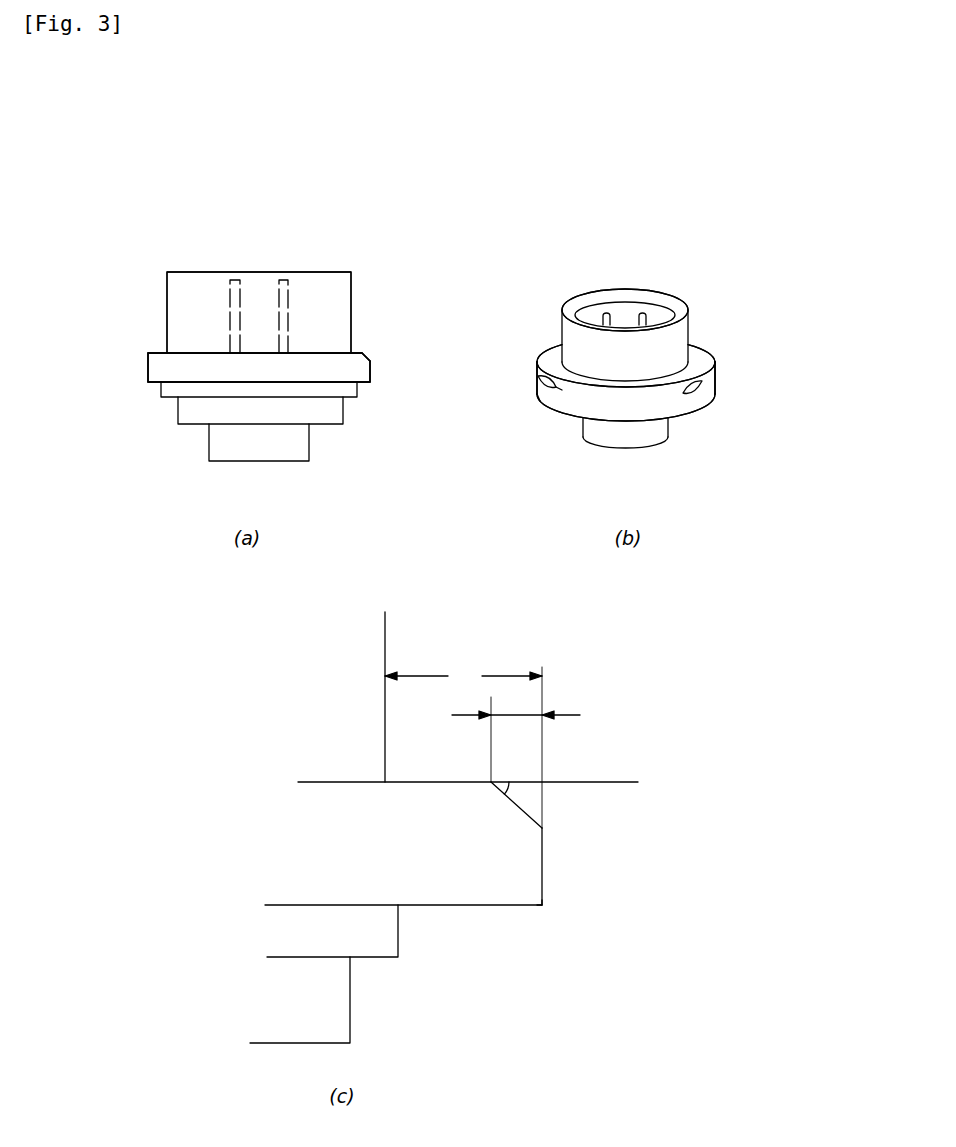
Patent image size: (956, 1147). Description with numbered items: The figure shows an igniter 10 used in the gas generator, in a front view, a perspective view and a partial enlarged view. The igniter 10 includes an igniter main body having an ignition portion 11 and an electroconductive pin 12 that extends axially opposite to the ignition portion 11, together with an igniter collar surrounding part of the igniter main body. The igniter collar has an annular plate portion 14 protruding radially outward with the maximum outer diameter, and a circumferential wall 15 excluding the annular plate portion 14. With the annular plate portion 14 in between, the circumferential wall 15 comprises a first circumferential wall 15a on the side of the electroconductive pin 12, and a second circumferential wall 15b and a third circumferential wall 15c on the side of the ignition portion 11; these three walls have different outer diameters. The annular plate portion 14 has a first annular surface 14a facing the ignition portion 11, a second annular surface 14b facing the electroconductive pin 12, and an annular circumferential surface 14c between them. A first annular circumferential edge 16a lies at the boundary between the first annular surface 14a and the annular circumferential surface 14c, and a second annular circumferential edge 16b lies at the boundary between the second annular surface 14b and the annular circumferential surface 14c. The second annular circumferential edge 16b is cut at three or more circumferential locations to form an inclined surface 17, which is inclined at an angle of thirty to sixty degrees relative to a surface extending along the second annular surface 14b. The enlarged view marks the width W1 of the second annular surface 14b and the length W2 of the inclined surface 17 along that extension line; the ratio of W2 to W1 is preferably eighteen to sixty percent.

The igniter 10 is at (370, 272).
The ignition portion 11 is at (260, 451).
The electroconductive pin 12 is at (238, 283).
The annular plate portion 14 is at (371, 372).
The first annular surface 14a is at (343, 382).
The second annular surface 14b is at (323, 352).
The annular circumferential surface 14c is at (312, 369).
The circumferential wall 15 is at (95, 362).
The first circumferential wall 15a is at (167, 344).
The second circumferential wall 15b is at (158, 388).
The third circumferential wall 15c is at (175, 415).
The first annular circumferential edge 16a is at (557, 418).
The second annular circumferential edge 16b is at (563, 389).
The inclined surface 17 is at (367, 355).
The width of the second annular surface W1 is at (463, 746).
The length of the inclined surface portion W2 is at (517, 713).